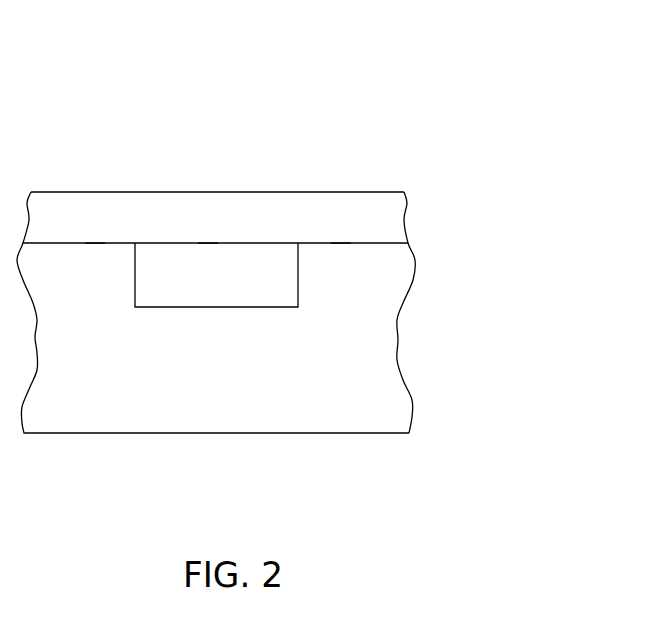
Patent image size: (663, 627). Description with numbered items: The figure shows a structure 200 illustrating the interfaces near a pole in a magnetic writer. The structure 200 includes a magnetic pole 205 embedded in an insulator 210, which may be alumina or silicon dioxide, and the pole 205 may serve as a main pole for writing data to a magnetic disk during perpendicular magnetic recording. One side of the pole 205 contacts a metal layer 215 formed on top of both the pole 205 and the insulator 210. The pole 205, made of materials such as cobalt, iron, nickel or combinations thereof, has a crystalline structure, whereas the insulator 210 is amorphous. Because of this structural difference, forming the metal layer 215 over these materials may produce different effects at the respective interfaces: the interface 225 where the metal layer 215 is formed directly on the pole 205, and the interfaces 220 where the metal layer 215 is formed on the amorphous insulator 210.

The structure 200 is at (431, 74).
The magnetic pole 205 is at (298, 285).
The insulator 210 is at (403, 385).
The metal layer 215 is at (404, 220).
The interface 220 is at (96, 229).
The interface 225 is at (210, 229).